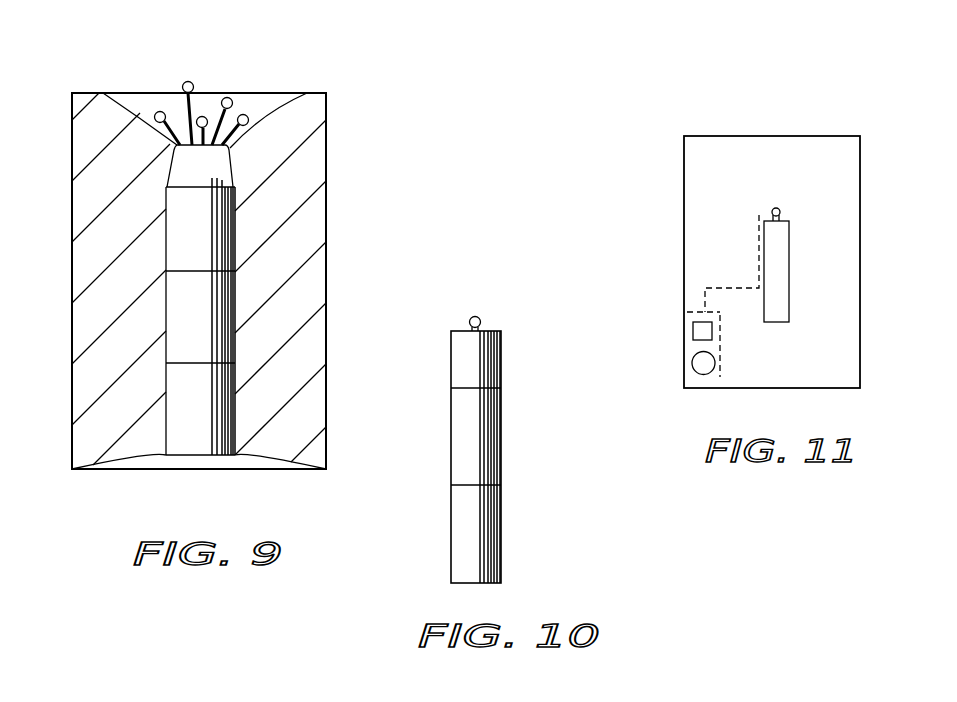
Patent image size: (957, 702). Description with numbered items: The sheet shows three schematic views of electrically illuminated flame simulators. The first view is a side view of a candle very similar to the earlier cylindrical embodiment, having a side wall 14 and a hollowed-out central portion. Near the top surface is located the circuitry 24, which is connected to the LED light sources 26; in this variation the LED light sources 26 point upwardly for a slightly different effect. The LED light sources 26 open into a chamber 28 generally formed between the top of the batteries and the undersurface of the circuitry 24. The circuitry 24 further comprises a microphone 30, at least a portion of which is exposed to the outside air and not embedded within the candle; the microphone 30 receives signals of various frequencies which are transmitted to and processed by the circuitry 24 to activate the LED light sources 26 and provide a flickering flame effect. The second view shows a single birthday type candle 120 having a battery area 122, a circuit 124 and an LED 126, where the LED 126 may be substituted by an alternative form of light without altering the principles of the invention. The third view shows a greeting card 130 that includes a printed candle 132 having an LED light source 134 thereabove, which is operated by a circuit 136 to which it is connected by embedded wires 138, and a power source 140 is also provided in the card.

In FIG. 9, the side wall 14 is at (327, 265).
In FIG. 9, the circuitry 24 is at (170, 148).
In FIG. 9, the LED light sources 26 is at (188, 81).
In FIG. 9, the chamber 28 is at (233, 186).
In FIG. 9, the microphone 30 is at (208, 118).
In FIG. 10, the birthday type candle 120 is at (478, 422).
In FIG. 10, the battery area 122 is at (488, 553).
In FIG. 10, the circuit 124 is at (475, 333).
In FIG. 10, the LED 126 is at (478, 317).
In FIG. 11, the greeting card 130 is at (731, 255).
In FIG. 11, the printed candle 132 is at (772, 253).
In FIG. 11, the LED light source 134 is at (770, 212).
In FIG. 11, the circuit 136 is at (693, 338).
In FIG. 11, the embedded wires 138 is at (703, 292).
In FIG. 11, the power source 140 is at (697, 367).